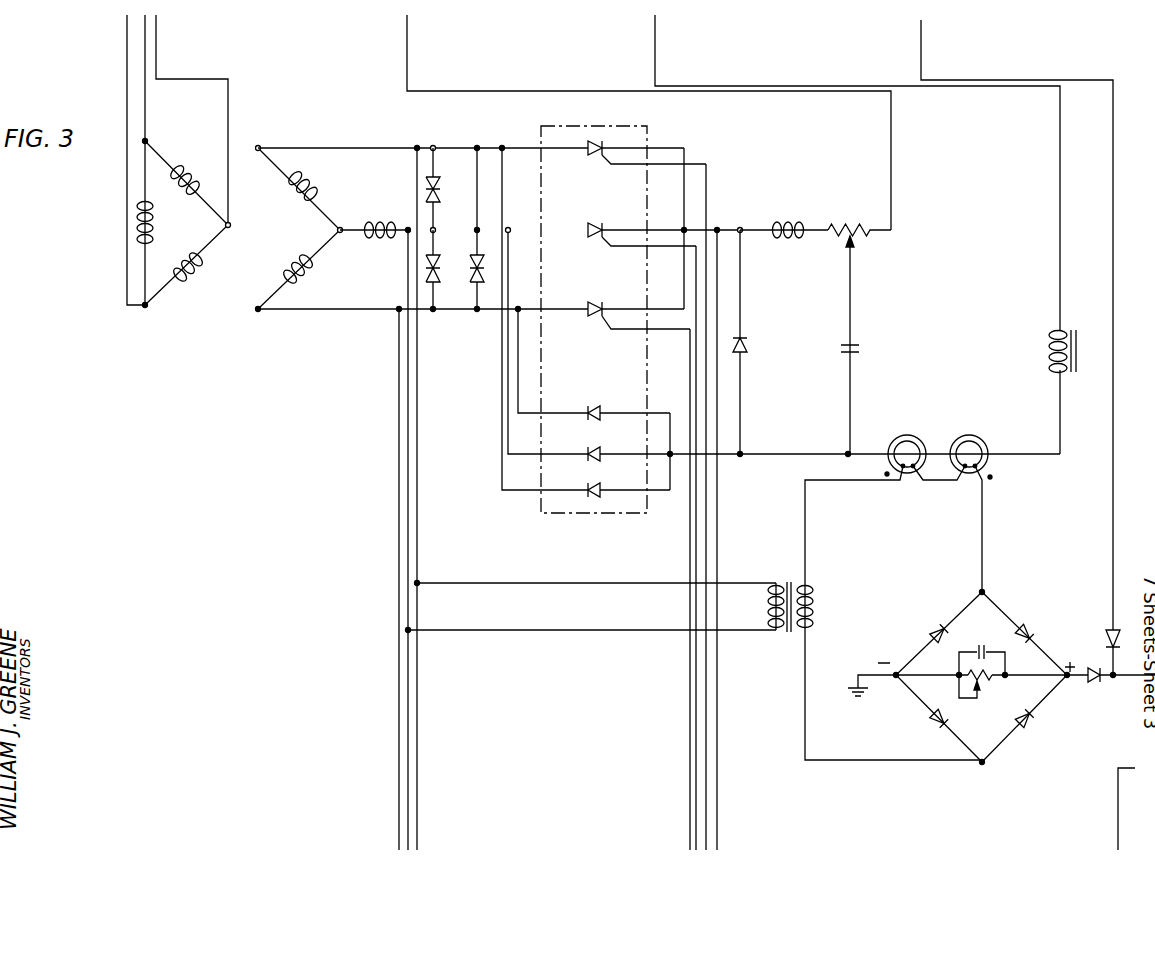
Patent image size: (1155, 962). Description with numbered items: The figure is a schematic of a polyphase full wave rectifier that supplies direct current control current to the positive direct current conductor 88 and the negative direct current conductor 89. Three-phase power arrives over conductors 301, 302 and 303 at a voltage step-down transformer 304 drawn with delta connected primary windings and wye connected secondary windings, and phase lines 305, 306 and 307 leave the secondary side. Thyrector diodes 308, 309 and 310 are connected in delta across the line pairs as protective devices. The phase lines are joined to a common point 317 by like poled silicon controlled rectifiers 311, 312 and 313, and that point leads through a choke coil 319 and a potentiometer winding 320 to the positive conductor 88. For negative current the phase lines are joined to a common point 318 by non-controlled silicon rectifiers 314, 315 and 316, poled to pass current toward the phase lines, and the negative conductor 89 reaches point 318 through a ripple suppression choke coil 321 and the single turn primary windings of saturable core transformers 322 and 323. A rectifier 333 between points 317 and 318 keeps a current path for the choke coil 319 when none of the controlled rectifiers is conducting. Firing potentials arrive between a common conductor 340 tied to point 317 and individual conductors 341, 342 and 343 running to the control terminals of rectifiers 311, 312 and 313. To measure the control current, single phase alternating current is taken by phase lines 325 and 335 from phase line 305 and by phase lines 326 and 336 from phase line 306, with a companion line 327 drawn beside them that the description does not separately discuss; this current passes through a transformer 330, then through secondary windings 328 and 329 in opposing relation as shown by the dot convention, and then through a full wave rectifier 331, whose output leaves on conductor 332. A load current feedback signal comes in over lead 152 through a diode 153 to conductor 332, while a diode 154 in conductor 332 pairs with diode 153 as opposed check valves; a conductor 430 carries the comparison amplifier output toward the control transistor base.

The conductor 301 is at (127, 77).
The conductor 302 is at (146, 108).
The conductor 303 is at (233, 88).
The voltage step-down transformer 304 is at (237, 272).
The phase line 305 is at (338, 147).
The phase line 306 is at (406, 233).
The phase line 307 is at (307, 311).
The thyrector diode 308 is at (437, 192).
The thyrector diode 309 is at (440, 272).
The thyrector diode 310 is at (483, 277).
The silicon controlled rectifier 311 is at (603, 158).
The silicon controlled rectifier 312 is at (603, 240).
The silicon controlled rectifier 313 is at (601, 318).
The silicon rectifier 314 is at (592, 484).
The silicon rectifier 315 is at (597, 448).
The silicon rectifier 316 is at (597, 407).
The common point 317 is at (686, 229).
The common point 318 is at (672, 458).
The choke coil 319 is at (786, 243).
The potentiometer winding 320 is at (870, 209).
The ripple suppression choke coil 321 is at (1050, 345).
The saturable core transformer 322 is at (907, 432).
The saturable core transformer 323 is at (972, 432).
The phase line 325 is at (418, 519).
The phase line 326 is at (407, 742).
The conductor 327 is at (398, 764).
The secondary winding 328 is at (904, 478).
The secondary winding 329 is at (966, 478).
The transformer 330 is at (787, 583).
The full wave rectifier 331 is at (1014, 606).
The conductor 332 is at (1130, 681).
The rectifier 333 is at (749, 346).
The phase line 335 is at (467, 581).
The phase line 336 is at (473, 631).
The common conductor 340 is at (718, 302).
The conductor 341 is at (705, 776).
The conductor 342 is at (695, 741).
The conductor 343 is at (689, 714).
The positive direct current conductor 88 is at (407, 79).
The negative direct current conductor 89 is at (656, 76).
The lead 152 is at (937, 84).
The diode 153 is at (1111, 628).
The diode 154 is at (1097, 684).
The conductor 430 is at (1118, 781).